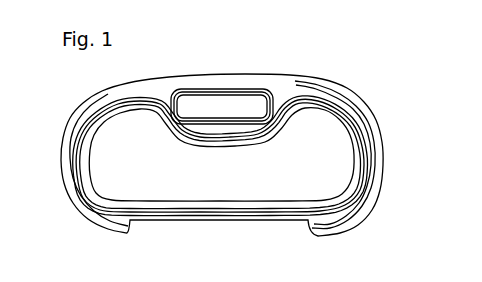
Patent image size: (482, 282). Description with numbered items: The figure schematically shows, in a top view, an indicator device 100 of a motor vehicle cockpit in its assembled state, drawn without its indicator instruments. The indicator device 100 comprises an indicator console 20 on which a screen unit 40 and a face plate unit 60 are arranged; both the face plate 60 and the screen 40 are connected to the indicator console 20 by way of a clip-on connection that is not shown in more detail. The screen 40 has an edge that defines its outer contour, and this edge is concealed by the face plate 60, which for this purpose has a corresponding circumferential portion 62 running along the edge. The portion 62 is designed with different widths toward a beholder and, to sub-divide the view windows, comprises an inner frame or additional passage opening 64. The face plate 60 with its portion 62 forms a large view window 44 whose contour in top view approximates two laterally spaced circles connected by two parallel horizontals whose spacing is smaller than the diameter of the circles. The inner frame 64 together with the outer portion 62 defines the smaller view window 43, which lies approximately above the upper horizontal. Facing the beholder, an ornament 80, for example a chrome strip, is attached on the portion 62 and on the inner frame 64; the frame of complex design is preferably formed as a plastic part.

The indicator device 100 is at (365, 68).
The indicator console 20 is at (244, 89).
The smaller view window 43 is at (267, 96).
The inner frame 64 is at (198, 108).
The screen unit 40 is at (348, 138).
The large view window 44 is at (84, 177).
The ornament 80 is at (376, 180).
The face plate unit 60 is at (367, 230).
The circumferential portion 62 is at (194, 228).